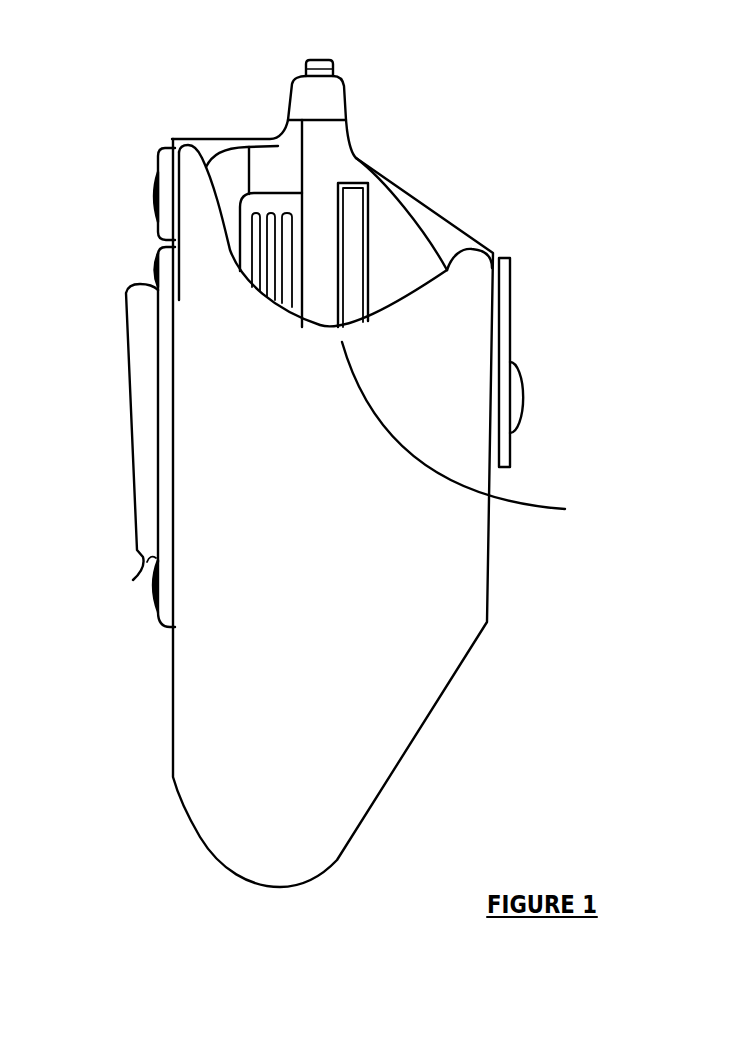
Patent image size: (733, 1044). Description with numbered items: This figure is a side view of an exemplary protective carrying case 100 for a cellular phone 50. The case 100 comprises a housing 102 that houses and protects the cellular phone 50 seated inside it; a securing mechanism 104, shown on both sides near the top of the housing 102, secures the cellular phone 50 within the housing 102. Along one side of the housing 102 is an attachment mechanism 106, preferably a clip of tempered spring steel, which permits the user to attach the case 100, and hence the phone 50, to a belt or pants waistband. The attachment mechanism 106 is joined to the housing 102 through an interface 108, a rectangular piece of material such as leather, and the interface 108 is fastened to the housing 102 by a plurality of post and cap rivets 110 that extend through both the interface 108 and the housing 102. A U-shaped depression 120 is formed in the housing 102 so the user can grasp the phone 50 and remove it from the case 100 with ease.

The protective carrying case 100 is at (178, 68).
The housing 102 is at (415, 758).
The cellular phone 50 is at (351, 118).
The securing mechanism 104 is at (190, 130).
The post and cap rivets 110 is at (143, 270).
The attachment mechanism 106 is at (123, 383).
The interface 108 is at (163, 633).
The U-shaped depressions 120 is at (475, 435).